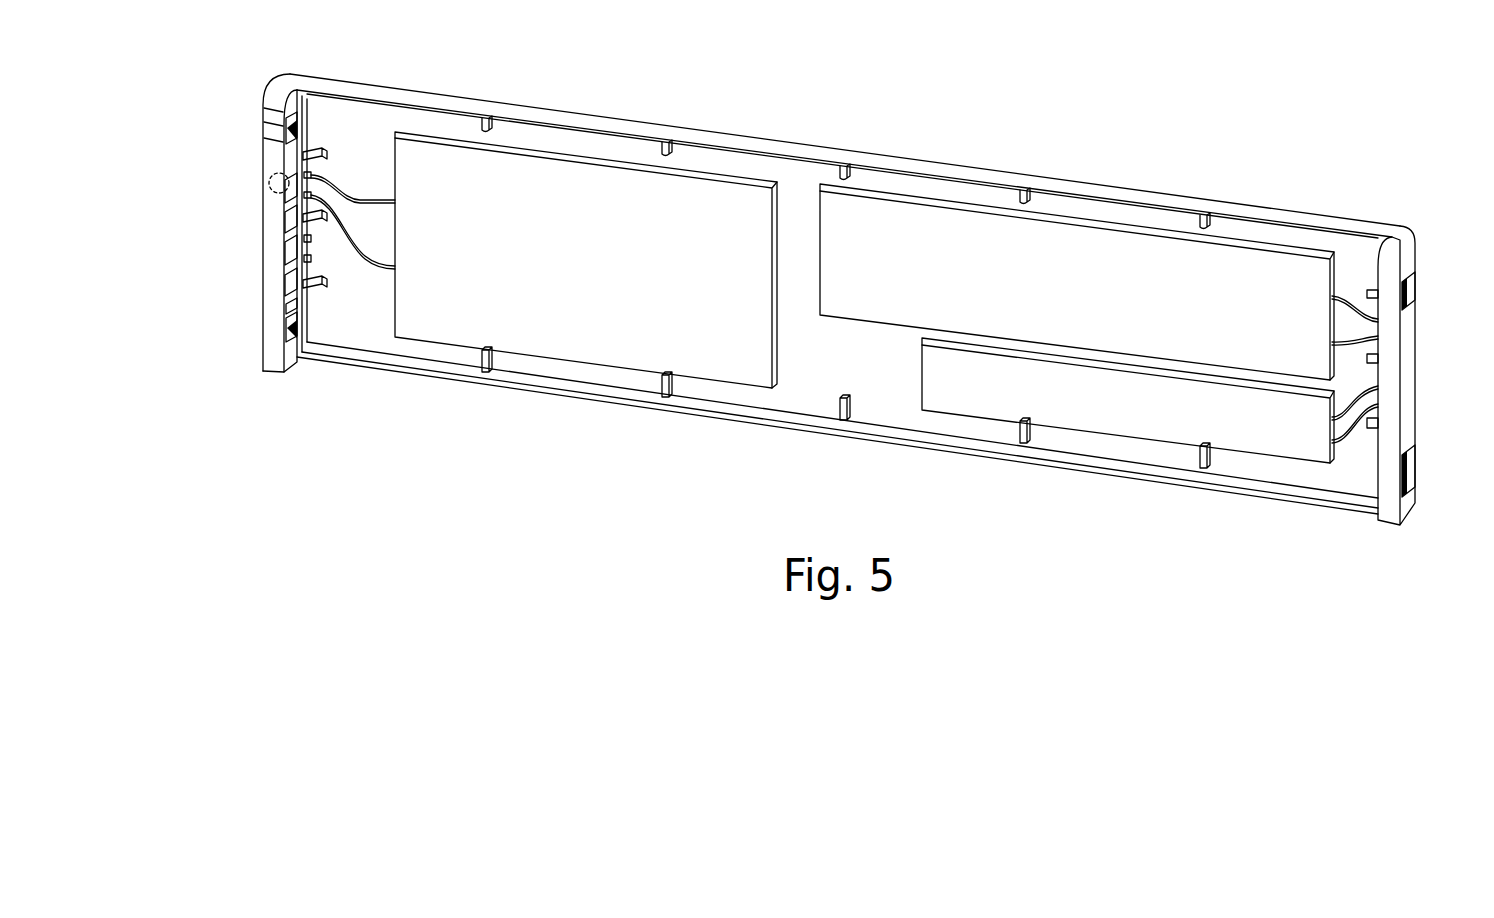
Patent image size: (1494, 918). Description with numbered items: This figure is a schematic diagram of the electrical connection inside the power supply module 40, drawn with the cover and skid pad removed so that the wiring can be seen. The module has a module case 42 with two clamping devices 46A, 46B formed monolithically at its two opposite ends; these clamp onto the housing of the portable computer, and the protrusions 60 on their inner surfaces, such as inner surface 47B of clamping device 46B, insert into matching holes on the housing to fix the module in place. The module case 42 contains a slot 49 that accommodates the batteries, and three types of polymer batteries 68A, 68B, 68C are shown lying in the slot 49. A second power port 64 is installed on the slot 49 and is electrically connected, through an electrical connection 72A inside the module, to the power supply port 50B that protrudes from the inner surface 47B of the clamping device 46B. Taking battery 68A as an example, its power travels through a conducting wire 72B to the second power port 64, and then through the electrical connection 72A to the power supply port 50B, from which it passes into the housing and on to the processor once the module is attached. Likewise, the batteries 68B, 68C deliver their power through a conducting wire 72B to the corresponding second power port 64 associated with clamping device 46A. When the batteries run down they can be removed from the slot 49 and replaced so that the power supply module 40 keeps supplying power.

The power supply module 40 is at (898, 116).
The module case 42 is at (593, 115).
The clamping device 46A is at (1398, 240).
The clamping device 46B is at (277, 93).
The inner surface 47B is at (288, 307).
The slot 49 is at (866, 393).
The power supply port 50B is at (286, 200).
The protrusion 60 is at (290, 142).
The second power port 64 is at (322, 173).
The battery 68A is at (647, 360).
The battery 68B is at (1108, 255).
The battery 68C is at (1088, 408).
The electrical connection 72A is at (274, 172).
The conducting wire 72B is at (377, 191).